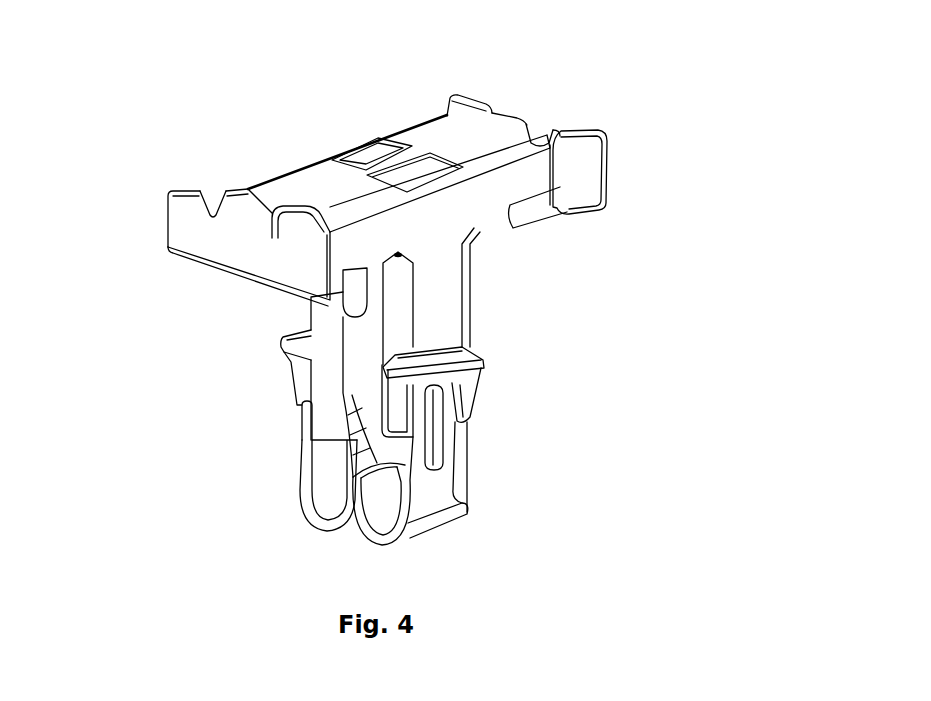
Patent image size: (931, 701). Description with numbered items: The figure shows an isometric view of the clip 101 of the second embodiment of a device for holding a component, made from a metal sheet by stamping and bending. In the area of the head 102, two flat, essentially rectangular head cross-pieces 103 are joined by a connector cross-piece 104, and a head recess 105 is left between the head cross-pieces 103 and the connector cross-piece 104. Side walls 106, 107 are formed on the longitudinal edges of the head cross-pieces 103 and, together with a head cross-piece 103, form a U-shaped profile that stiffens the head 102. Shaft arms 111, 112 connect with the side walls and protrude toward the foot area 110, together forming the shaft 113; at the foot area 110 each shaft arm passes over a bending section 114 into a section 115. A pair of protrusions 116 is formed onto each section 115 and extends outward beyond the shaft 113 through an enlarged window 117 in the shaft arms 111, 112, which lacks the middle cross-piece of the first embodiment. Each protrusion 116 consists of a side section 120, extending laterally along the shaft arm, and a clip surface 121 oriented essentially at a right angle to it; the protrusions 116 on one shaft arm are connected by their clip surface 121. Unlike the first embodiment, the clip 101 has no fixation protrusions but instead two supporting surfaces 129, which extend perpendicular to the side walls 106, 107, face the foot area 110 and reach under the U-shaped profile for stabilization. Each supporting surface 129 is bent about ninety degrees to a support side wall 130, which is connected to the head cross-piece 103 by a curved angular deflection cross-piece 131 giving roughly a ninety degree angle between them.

The clip 101 is at (735, 247).
The head 102 is at (670, 90).
The head cross-piece 103 is at (467, 140).
The connector cross-piece 104 is at (373, 150).
The head recess 105 is at (345, 153).
The side wall 106 is at (512, 204).
The side wall 107 is at (345, 272).
The foot area 110 is at (522, 508).
The shaft arm 111 is at (437, 320).
The shaft arm 112 is at (303, 418).
The shaft 113 is at (622, 350).
The bending section 114 is at (307, 522).
The section 115 is at (347, 470).
The protrusion 116 is at (256, 380).
The window 117 is at (460, 345).
The side section 120 is at (470, 392).
The clip surface 121 is at (283, 333).
The supporting surface 129 is at (345, 262).
The support side wall 130 is at (183, 220).
The angular deflection cross-piece 131 is at (520, 117).